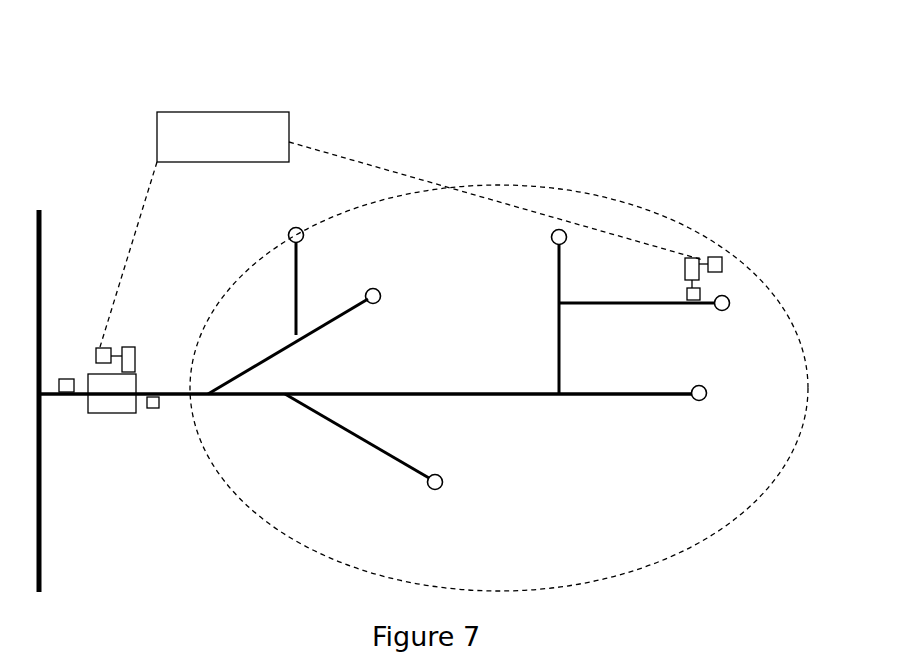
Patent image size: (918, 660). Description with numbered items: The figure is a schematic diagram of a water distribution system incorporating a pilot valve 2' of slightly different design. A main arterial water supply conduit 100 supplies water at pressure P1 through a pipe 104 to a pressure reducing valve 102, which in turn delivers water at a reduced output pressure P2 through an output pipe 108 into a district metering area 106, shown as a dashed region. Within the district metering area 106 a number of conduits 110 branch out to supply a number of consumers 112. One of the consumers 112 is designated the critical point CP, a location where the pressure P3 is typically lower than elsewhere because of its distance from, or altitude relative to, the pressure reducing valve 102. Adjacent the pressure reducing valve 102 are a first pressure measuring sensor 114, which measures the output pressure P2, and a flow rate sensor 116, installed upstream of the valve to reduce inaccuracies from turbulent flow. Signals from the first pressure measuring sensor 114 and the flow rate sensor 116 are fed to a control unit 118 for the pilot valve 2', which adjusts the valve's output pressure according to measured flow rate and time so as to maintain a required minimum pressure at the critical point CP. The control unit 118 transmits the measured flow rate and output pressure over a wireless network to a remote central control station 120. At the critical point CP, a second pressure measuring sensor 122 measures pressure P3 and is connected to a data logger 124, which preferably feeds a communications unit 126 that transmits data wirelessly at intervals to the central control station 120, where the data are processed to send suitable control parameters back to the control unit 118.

The main arterial water supply conduit 100 is at (87, 385).
The pressure reducing valve 102 is at (112, 413).
The pipe 104 is at (50, 398).
The district metering area 106 is at (277, 573).
The output pipe 108 is at (165, 396).
The conduits 110 is at (347, 317).
The consumers 112 is at (303, 238).
The first pressure measuring sensor 114 is at (152, 408).
The flow rate sensor 116 is at (66, 379).
The control unit 118 is at (107, 348).
The pilot valve 2' is at (166, 304).
The remote central control station 120 is at (289, 135).
The second pressure measuring sensor 122 is at (687, 295).
The data logger 124 is at (692, 258).
The communications unit 126 is at (715, 257).
The critical point CP is at (724, 276).